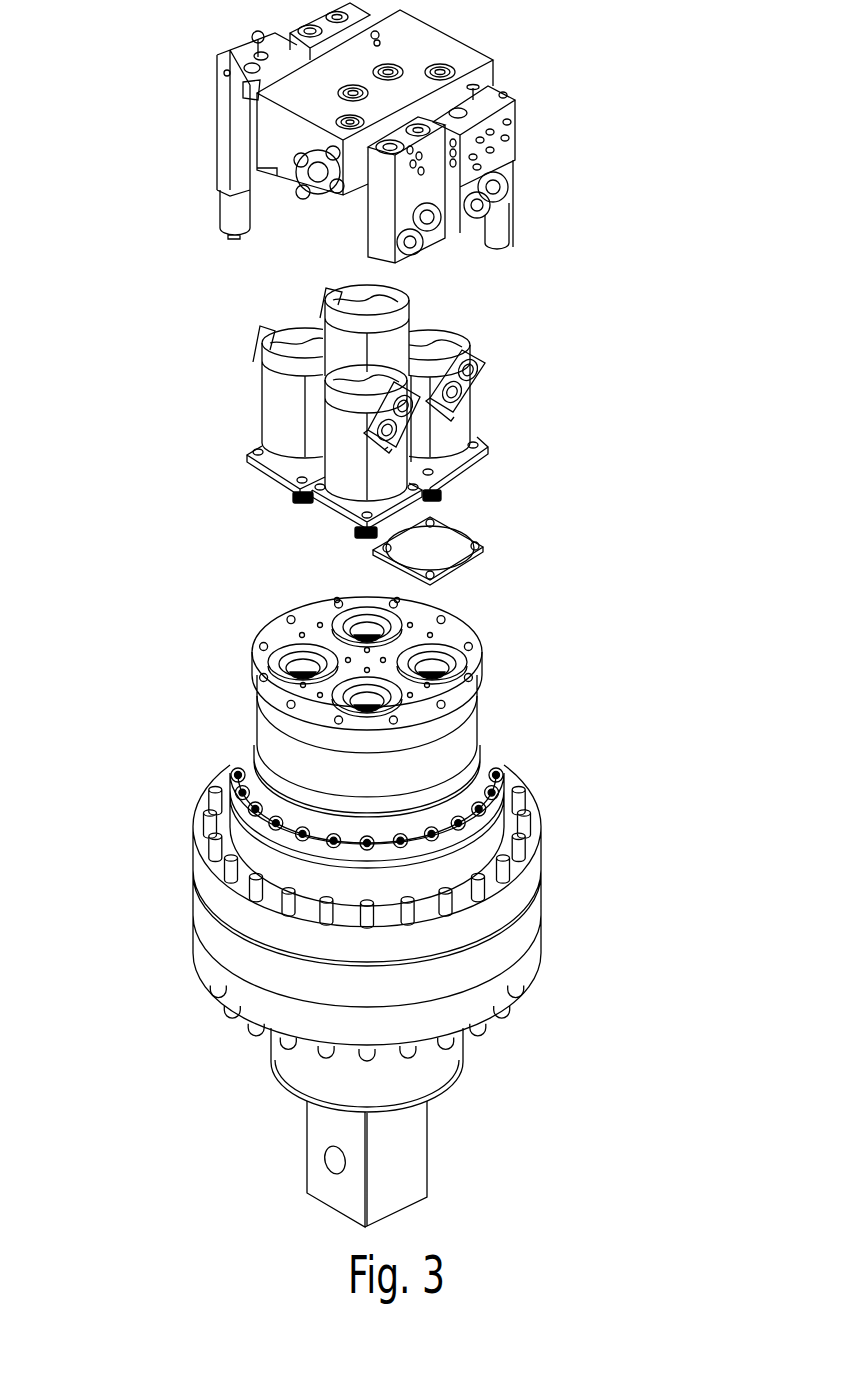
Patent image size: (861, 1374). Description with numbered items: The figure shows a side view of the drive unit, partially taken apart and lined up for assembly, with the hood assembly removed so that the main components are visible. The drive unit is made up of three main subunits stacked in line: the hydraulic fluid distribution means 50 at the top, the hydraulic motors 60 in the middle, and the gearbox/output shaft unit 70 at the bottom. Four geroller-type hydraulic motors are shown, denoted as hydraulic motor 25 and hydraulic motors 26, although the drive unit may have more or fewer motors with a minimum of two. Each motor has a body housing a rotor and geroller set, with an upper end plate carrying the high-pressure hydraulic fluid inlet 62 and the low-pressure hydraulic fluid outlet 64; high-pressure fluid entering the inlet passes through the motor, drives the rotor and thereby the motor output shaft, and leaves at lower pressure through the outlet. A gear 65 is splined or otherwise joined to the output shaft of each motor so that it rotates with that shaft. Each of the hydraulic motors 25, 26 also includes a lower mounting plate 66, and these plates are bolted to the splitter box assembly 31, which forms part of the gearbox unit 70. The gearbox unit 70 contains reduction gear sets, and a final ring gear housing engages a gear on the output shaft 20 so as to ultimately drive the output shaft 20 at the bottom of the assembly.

The output shaft 20 is at (430, 1145).
The hydraulic motor 25 is at (415, 320).
The hydraulic motor 26 is at (282, 402).
The splitter box assembly 31 is at (238, 691).
The hydraulic fluid distribution means 50 is at (533, 105).
The hydraulic motors 60 is at (435, 374).
The hydraulic fluid inlet 62 is at (483, 390).
The hydraulic fluid outlet 64 is at (480, 356).
The gear 65 is at (335, 548).
The lower mounting plate 66 is at (262, 473).
The gearbox/output shaft unit 70 is at (540, 805).